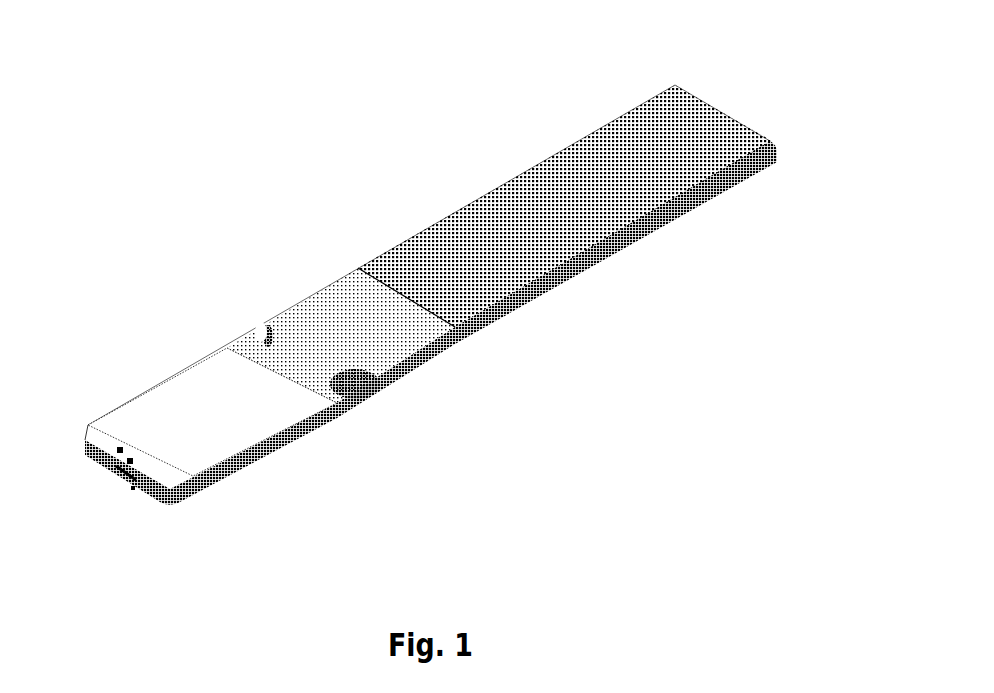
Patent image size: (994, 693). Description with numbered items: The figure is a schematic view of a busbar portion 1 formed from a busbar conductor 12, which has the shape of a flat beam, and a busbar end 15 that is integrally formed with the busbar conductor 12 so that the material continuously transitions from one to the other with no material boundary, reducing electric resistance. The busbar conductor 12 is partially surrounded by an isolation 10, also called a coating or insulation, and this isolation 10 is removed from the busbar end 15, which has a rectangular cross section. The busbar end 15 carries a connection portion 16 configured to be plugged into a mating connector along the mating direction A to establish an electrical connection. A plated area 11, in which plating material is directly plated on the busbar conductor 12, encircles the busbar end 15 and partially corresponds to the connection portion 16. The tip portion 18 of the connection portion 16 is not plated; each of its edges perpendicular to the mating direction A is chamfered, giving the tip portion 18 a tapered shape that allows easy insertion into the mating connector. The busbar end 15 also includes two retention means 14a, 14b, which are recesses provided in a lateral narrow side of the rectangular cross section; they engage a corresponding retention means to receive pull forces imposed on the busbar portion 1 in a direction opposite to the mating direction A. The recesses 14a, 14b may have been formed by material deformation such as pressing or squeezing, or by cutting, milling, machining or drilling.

The busbar portion 1 is at (101, 52).
The isolation 10 is at (658, 188).
The plated area 11 is at (280, 385).
The busbar conductor 12 is at (398, 333).
The retention means 14a is at (367, 390).
The retention means 14b is at (258, 333).
The busbar end 15 is at (133, 208).
The connection portion 16 is at (240, 425).
The tip portion 18 is at (113, 450).
The mating direction A is at (760, 82).